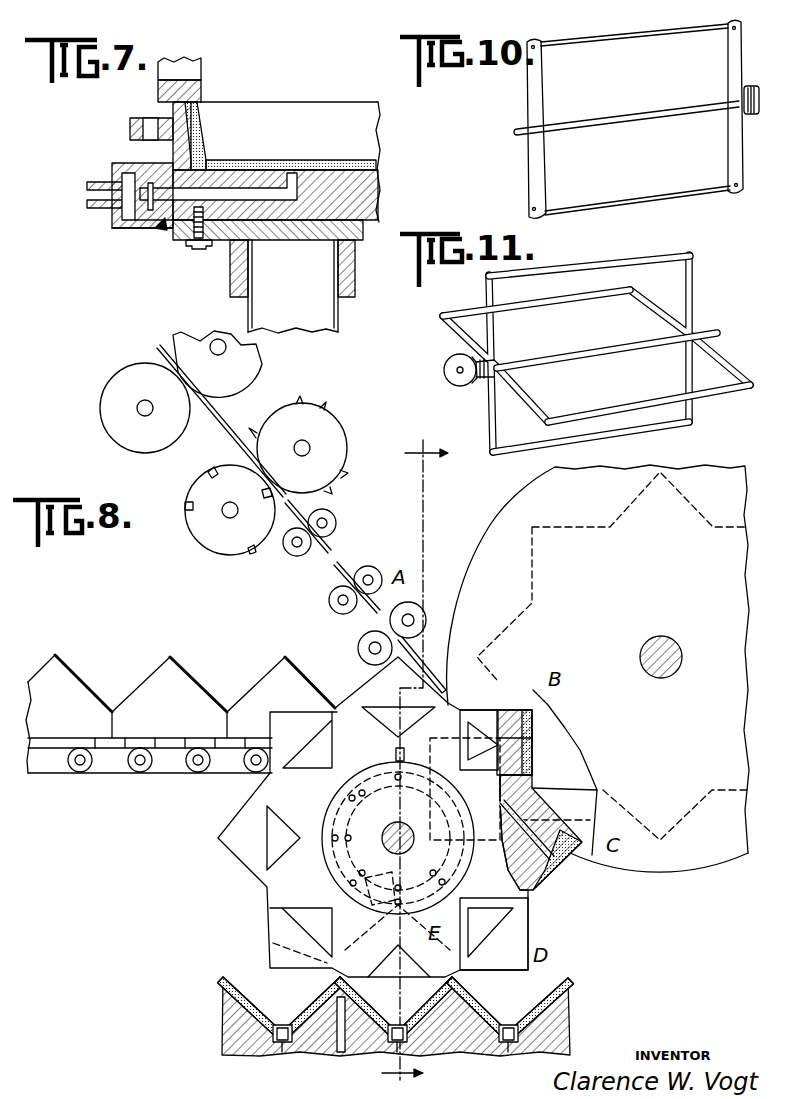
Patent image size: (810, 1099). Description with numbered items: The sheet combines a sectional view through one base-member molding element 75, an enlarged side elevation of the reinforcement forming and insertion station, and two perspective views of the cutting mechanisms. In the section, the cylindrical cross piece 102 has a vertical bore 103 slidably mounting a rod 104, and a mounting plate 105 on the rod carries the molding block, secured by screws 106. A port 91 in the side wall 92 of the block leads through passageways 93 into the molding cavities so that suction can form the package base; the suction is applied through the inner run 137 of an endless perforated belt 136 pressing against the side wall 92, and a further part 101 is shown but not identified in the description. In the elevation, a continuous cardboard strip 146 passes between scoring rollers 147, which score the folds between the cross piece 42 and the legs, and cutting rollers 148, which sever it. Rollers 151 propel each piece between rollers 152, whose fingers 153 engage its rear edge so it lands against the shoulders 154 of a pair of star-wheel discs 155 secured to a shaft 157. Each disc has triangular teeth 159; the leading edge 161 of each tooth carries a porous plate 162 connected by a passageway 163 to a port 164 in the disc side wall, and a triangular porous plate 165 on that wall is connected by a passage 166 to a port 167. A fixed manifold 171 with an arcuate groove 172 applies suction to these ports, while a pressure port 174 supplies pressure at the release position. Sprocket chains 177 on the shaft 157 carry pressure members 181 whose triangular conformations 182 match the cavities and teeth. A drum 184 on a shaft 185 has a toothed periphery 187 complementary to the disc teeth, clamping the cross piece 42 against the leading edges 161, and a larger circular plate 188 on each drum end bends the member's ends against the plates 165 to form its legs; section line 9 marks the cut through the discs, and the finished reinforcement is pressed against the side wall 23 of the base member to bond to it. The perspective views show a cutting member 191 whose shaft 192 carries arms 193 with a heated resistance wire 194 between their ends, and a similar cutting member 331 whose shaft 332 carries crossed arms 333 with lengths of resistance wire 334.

In FIG. 7, the inner run of belt 137 is at (165, 182).
In FIG. 7, the port 91 is at (201, 162).
In FIG. 7, the passageways 93 is at (261, 196).
In FIG. 7, the base member molding elements 75 is at (368, 194).
In FIG. 8, the base member molding elements 75 is at (232, 1010).
In FIG. 7, the mounting plate 105 is at (366, 228).
In FIG. 7, the rod 104 is at (316, 318).
In FIG. 7, the cross piece 102 is at (108, 170).
In FIG. 7, the vertical bore 103 is at (148, 198).
In FIG. 7, the gasket 101 is at (165, 216).
In FIG. 7, the endless perforated belt 136 is at (163, 228).
In FIG. 7, the side wall 92 is at (185, 225).
In FIG. 7, the screws 106 is at (200, 250).
In FIG. 10, the arms 193 is at (722, 132).
In FIG. 10, the resistance wire 194 is at (627, 38).
In FIG. 11, the resistance wire 194 is at (718, 449).
In FIG. 8, the resistance wire 194 is at (683, 514).
In FIG. 10, the shaft 192 is at (656, 110).
In FIG. 10, the cutting member 191 is at (516, 118).
In FIG. 11, the crossed arms 333 is at (510, 386).
In FIG. 11, the resistance wire 334 is at (627, 262).
In FIG. 11, the shaft 332 is at (610, 348).
In FIG. 11, the cutting member 331 is at (453, 356).
In FIG. 8, the scoring rollers 147 is at (100, 395).
In FIG. 8, the continuous strip 146 is at (220, 432).
In FIG. 8, the cutting rollers 148 is at (295, 404).
In FIG. 8, the rollers 151 is at (337, 526).
In FIG. 8, the rollers 152 is at (428, 614).
In FIG. 8, the fingers 153 is at (357, 640).
In FIG. 8, the leading edge 161 is at (420, 674).
In FIG. 8, the section line 9- 9 is at (415, 768).
In FIG. 8, the circular plate 188 is at (698, 855).
In FIG. 8, the shaft 185 is at (668, 640).
In FIG. 8, the toothed periphery 187 is at (548, 566).
In FIG. 8, the drum 184 is at (553, 575).
In FIG. 8, the shoulders 154 is at (497, 680).
In FIG. 8, the endless sprocket chains 177 is at (112, 776).
In FIG. 8, the triangular conformation 182 is at (70, 652).
In FIG. 8, the pressure member 181 is at (68, 692).
In FIG. 8, the star wheels or discs 155 is at (287, 877).
In FIG. 8, the triangular teeth 159 is at (242, 840).
In FIG. 8, the plate of porous material 165 is at (345, 700).
In FIG. 8, the passageway 163 is at (496, 732).
In FIG. 8, the plate of porous material 162 is at (545, 720).
In FIG. 8, the cross piece 42 is at (540, 742).
In FIG. 8, the passage 166 is at (533, 782).
In FIG. 8, the port 167 is at (547, 805).
In FIG. 8, the arcuate groove 172 is at (452, 874).
In FIG. 8, the shaft 157 is at (385, 833).
In FIG. 8, the port 164 is at (392, 775).
In FIG. 8, the fixed manifold 171 is at (337, 788).
In FIG. 8, the pressure port 174 is at (410, 862).
In FIG. 8, the side wall 23 is at (372, 1003).